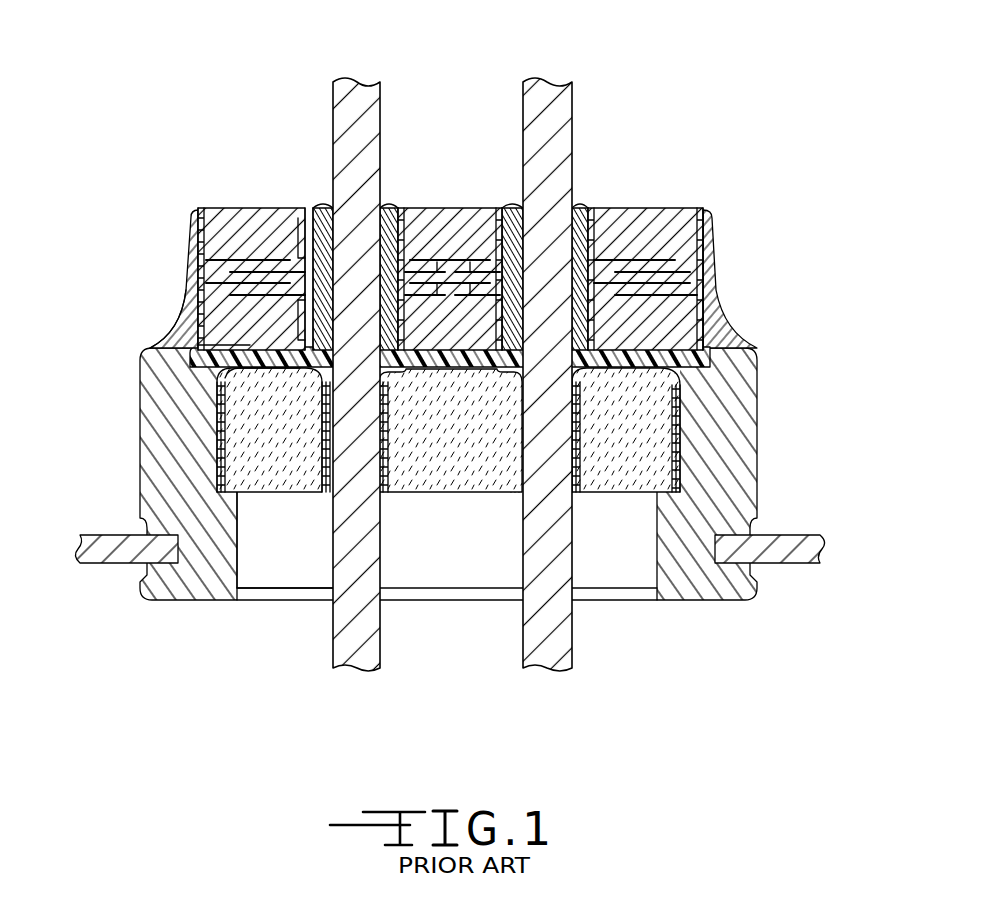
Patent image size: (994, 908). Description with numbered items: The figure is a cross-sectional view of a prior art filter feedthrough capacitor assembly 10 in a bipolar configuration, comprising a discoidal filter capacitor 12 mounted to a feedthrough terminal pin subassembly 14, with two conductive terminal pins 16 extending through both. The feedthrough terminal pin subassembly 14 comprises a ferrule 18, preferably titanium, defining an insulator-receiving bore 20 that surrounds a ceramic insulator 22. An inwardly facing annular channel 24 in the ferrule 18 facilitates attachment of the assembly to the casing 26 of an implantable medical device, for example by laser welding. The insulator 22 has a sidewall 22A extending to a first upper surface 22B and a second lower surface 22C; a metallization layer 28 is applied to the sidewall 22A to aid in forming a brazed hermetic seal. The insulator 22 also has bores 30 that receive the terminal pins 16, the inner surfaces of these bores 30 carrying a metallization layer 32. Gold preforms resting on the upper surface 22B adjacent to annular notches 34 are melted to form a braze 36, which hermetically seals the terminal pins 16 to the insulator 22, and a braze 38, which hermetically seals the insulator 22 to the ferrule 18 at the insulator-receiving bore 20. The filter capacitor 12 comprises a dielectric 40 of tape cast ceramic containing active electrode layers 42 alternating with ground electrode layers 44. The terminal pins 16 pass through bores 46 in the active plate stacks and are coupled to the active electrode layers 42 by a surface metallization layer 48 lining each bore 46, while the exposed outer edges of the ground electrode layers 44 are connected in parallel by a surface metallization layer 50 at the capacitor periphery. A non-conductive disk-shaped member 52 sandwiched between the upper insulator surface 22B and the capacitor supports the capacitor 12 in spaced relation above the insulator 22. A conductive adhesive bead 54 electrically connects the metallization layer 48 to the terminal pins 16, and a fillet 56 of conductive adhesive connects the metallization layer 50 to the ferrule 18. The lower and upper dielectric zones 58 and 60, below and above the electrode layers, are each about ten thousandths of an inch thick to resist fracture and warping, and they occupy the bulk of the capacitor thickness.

The filter feedthrough capacitor assembly 10 is at (652, 116).
The filter capacitor 12 is at (436, 231).
The feedthrough terminal pin subassembly 14 is at (496, 466).
The terminal pins 16 is at (523, 104).
The ferrule 18 is at (747, 478).
The insulator-receiving bore 20 is at (682, 423).
The insulator 22 is at (529, 468).
The sidewall 22A is at (420, 389).
The first upper surface 22B is at (195, 355).
The second lower surface 22C is at (273, 493).
The annular channel 24 is at (748, 532).
The casing 26 is at (782, 555).
The metallization layer 28 is at (213, 412).
The bores 30 is at (510, 460).
The metallization layer 32 is at (320, 493).
The annular notches 34 is at (305, 393).
The braze 36 is at (561, 437).
The braze 38 is at (227, 371).
The dielectric 40 is at (226, 216).
The active electrode layers 42 is at (470, 264).
The ground electrode layers 44 is at (437, 262).
The bores 46 is at (308, 212).
The surface metallization layer 48 is at (263, 237).
The surface metallization layer 50 is at (707, 340).
The non-conductive disk-shaped member 52 is at (250, 347).
The conductive adhesive bead 54 is at (392, 208).
The fillet 56 is at (186, 340).
The lower dielectric zone 58 is at (290, 323).
The upper dielectric zone 60 is at (305, 258).